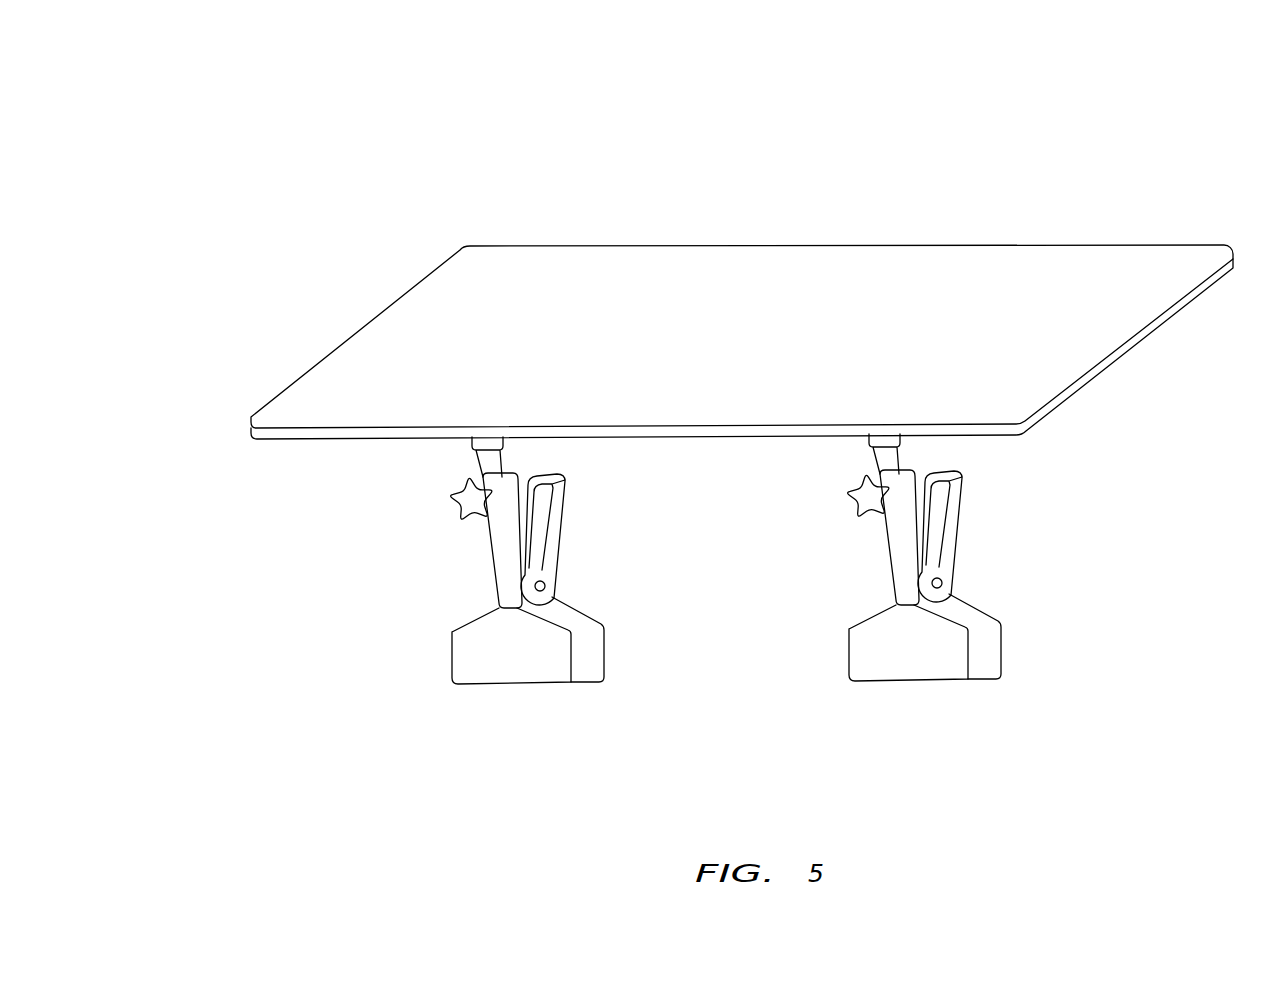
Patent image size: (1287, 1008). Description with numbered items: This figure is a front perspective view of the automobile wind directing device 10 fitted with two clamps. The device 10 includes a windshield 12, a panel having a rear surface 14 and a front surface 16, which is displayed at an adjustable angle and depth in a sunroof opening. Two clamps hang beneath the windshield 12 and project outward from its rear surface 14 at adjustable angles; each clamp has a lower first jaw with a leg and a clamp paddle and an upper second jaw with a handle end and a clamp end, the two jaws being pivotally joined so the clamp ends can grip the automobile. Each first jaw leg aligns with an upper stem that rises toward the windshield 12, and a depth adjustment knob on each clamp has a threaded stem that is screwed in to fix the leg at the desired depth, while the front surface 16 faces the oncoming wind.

The automobile wind directing device 10 is at (883, 131).
The windshield 12 is at (1037, 241).
The rear surface 14 is at (1128, 348).
The front surface 16 is at (1173, 250).